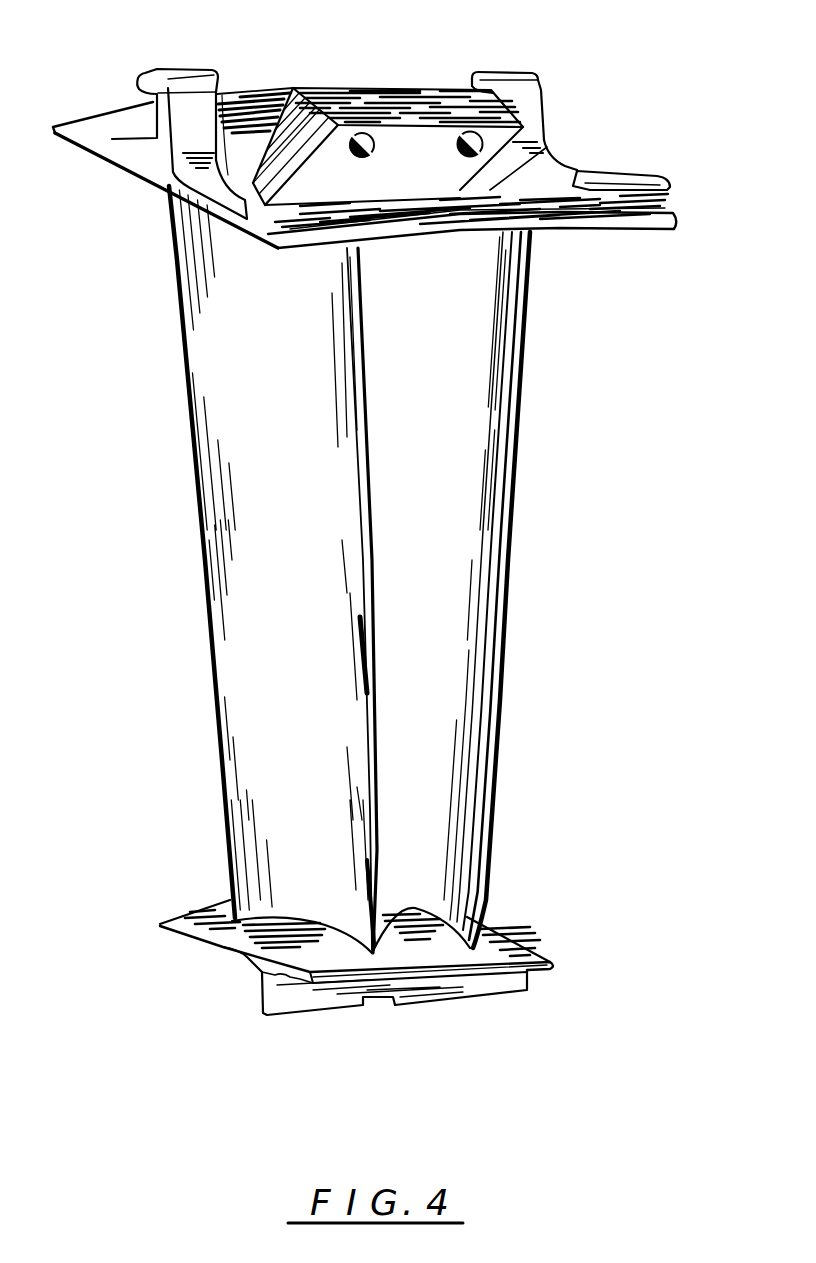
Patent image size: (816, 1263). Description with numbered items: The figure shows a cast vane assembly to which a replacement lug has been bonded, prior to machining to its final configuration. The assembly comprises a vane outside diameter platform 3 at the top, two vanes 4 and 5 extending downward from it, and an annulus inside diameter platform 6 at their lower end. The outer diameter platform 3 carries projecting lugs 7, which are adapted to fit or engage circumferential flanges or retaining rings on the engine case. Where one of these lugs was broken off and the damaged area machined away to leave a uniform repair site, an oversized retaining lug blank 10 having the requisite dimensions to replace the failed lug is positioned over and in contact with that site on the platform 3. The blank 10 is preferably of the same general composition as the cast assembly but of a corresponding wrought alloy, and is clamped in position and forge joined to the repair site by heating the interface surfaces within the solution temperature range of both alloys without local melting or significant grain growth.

The vane outside diameter platform 3 is at (554, 148).
The vane 4 is at (305, 540).
The vane 5 is at (432, 540).
The annulus inside diameter platform 6 is at (508, 928).
The projecting lug 7 is at (182, 72).
The oversized retaining lug blank 10 is at (403, 93).